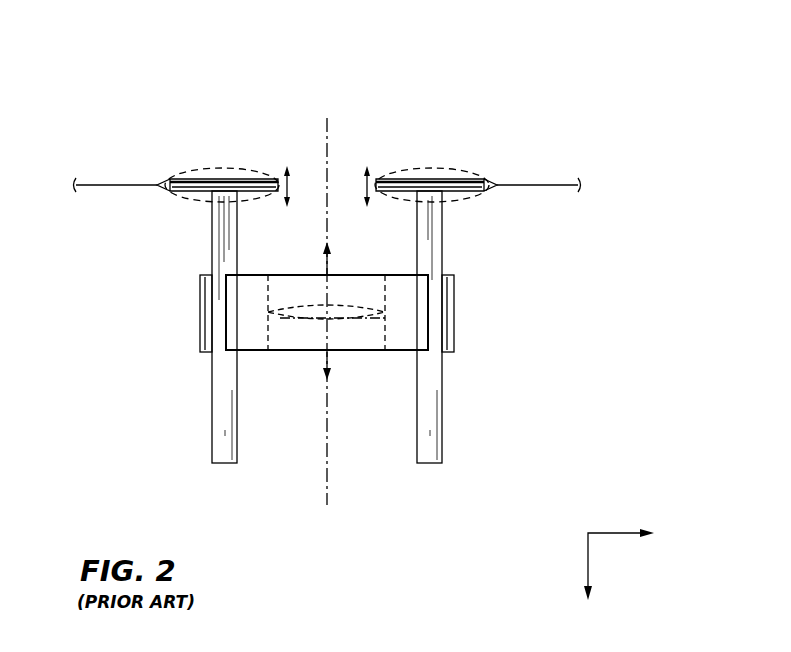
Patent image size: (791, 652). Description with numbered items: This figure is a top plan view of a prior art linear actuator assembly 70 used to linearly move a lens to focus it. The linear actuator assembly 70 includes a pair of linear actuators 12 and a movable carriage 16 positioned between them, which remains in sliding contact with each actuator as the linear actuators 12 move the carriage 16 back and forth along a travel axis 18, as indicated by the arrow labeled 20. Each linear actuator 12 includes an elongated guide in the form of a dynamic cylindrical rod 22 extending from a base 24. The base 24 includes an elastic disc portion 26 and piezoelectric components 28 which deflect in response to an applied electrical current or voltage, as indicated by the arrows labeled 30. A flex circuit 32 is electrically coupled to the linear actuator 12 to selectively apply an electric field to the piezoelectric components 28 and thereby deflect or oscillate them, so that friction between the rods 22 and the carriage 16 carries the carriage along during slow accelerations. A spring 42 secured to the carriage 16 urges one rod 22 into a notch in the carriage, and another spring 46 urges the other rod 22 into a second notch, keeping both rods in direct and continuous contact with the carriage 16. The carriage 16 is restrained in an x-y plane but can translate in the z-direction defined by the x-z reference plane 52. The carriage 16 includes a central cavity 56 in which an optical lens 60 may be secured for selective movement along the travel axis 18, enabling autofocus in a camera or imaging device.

The linear actuator assembly 70 is at (531, 45).
The linear actuator 12 is at (160, 238).
The dynamic cylindrical rod 22 is at (212, 379).
The base 24 is at (205, 142).
The piezoelectric components 28 is at (248, 179).
The elastic disc portion 26 is at (271, 180).
The flex circuit 32 is at (116, 183).
The deflection arrows 30 is at (293, 188).
The carriage 16 is at (253, 333).
The spring 42 is at (200, 312).
The spring 46 is at (455, 312).
The optical lens 60 is at (296, 322).
The travel axis 18 is at (326, 497).
The arrow 20 is at (324, 264).
The central cavity 56 is at (378, 392).
The x-z reference plane 52 is at (588, 567).